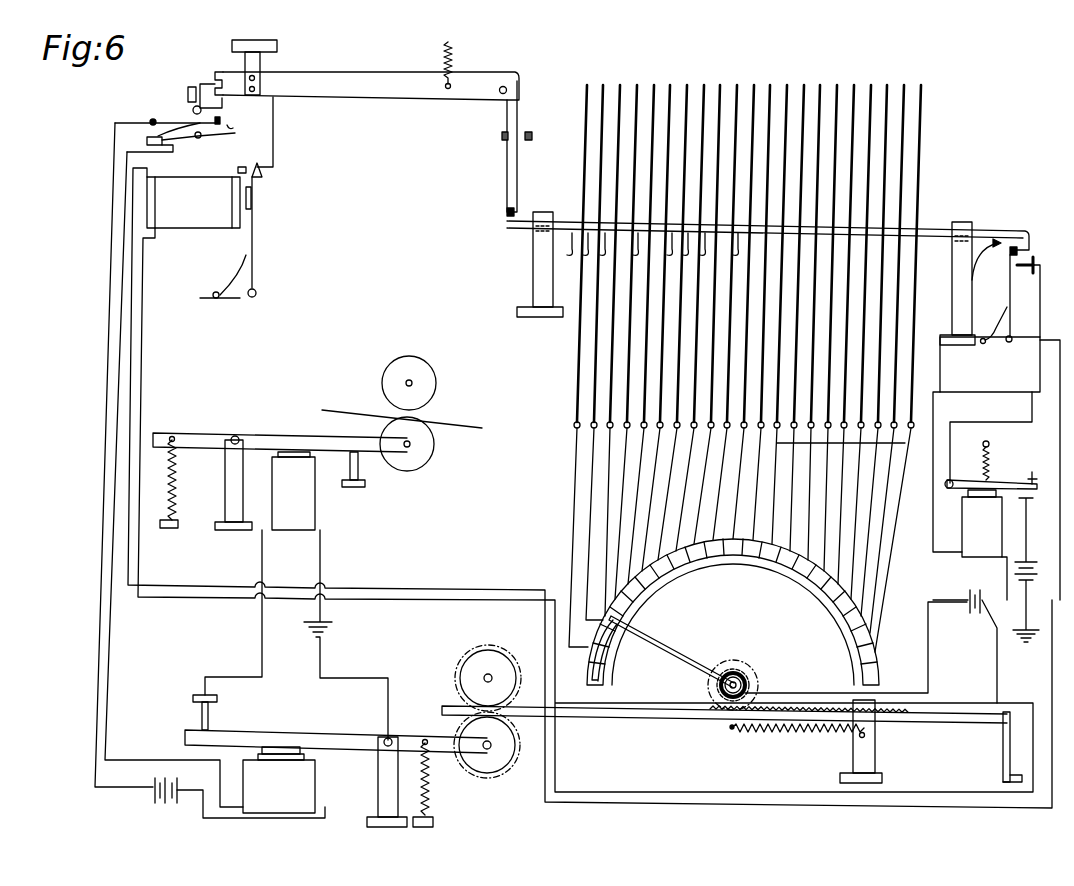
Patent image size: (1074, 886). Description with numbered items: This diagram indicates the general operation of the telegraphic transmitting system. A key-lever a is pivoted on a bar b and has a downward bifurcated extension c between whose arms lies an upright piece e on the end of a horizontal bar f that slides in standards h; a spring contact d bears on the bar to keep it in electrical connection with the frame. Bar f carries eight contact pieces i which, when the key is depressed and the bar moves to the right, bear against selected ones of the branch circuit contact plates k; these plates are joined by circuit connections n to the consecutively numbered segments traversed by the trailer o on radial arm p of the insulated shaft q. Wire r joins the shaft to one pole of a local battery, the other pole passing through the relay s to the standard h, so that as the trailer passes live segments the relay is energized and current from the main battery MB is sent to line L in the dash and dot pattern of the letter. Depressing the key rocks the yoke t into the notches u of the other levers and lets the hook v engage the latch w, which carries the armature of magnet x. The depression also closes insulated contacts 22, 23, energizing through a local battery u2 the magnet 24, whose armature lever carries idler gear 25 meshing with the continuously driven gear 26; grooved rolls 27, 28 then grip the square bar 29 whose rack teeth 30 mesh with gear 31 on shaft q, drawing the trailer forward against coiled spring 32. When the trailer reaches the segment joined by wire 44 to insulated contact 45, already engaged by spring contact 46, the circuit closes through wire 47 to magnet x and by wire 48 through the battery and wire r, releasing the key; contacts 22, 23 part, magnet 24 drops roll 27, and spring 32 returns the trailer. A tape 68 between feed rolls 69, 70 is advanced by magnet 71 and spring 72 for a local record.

The key-lever a is at (360, 79).
The bar b is at (510, 88).
The downward bifurcated extension c is at (517, 175).
The spring contact d is at (982, 236).
The upright piece e is at (505, 216).
The horizontal bar f is at (512, 232).
The supports or standards h is at (532, 285).
The contact pieces i is at (571, 255).
The branch circuit contact plates k is at (607, 374).
The circuit connections n is at (605, 518).
The trailer o is at (607, 674).
The radial arm p is at (668, 653).
The rotatable shaft q is at (746, 684).
The wire r is at (931, 669).
The relay s is at (991, 520).
The pivoted yoke t is at (197, 82).
The notches u is at (222, 72).
The battery u2 is at (152, 798).
The hook v is at (276, 151).
The latch w is at (254, 224).
The electromagnet x is at (196, 197).
The line L is at (991, 437).
The main battery MB is at (1036, 590).
The insulated contact 22 is at (186, 121).
The insulated contact 23 is at (192, 137).
The magnet 24 is at (332, 761).
The idler gear 25 is at (494, 765).
The continuously driven gear 26 is at (512, 662).
The grooved roll 27 is at (500, 790).
The grooved roll 28 is at (492, 660).
The endwise movable bar 29 is at (615, 721).
The rack teeth 30 is at (711, 712).
The gear 31 is at (722, 689).
The coiled spring 32 is at (786, 738).
The wire 44 is at (976, 393).
The insulated contact 45 is at (1036, 265).
The insulated spring contact 46 is at (1011, 300).
The wire 47 is at (1058, 450).
The wire 48 is at (140, 324).
The tape 68 is at (483, 421).
The feed roll 69 is at (430, 460).
The feed roll 70 is at (437, 378).
The magnet 71 is at (296, 596).
The spring 72 is at (178, 486).